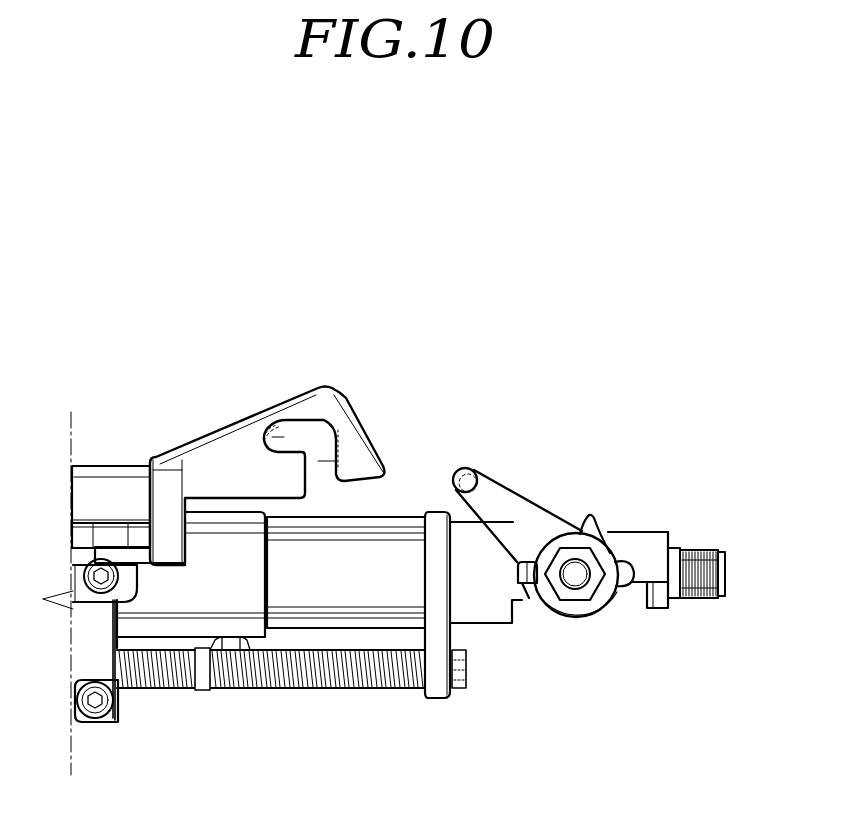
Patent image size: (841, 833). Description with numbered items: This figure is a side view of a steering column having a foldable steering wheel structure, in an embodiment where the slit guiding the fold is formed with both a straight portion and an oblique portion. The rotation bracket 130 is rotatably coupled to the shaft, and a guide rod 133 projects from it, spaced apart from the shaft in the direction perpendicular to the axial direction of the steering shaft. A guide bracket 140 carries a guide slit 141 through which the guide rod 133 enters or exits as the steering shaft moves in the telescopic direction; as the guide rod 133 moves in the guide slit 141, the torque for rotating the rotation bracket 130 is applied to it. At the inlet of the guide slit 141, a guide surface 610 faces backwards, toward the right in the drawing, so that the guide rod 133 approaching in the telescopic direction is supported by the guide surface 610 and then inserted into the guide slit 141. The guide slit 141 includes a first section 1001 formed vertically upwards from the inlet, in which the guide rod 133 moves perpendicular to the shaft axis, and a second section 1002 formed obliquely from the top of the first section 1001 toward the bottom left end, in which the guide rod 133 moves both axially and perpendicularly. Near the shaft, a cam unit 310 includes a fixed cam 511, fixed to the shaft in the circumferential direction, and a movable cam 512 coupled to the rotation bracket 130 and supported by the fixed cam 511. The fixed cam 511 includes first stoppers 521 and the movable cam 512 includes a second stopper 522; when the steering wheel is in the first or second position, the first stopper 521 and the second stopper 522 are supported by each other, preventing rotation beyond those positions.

The guide bracket 140 is at (233, 447).
The guide slit 141 is at (356, 334).
The first section 1001 is at (336, 462).
The second section 1002 is at (279, 437).
The rotation bracket 130 is at (515, 483).
The guide rod 133 is at (463, 470).
The cam unit 310 is at (581, 593).
The fixed cam 511 is at (607, 557).
The movable cam 512 is at (623, 567).
The first stopper 521 is at (518, 575).
The second stopper 522 is at (537, 597).
The guide surface 610 is at (312, 488).